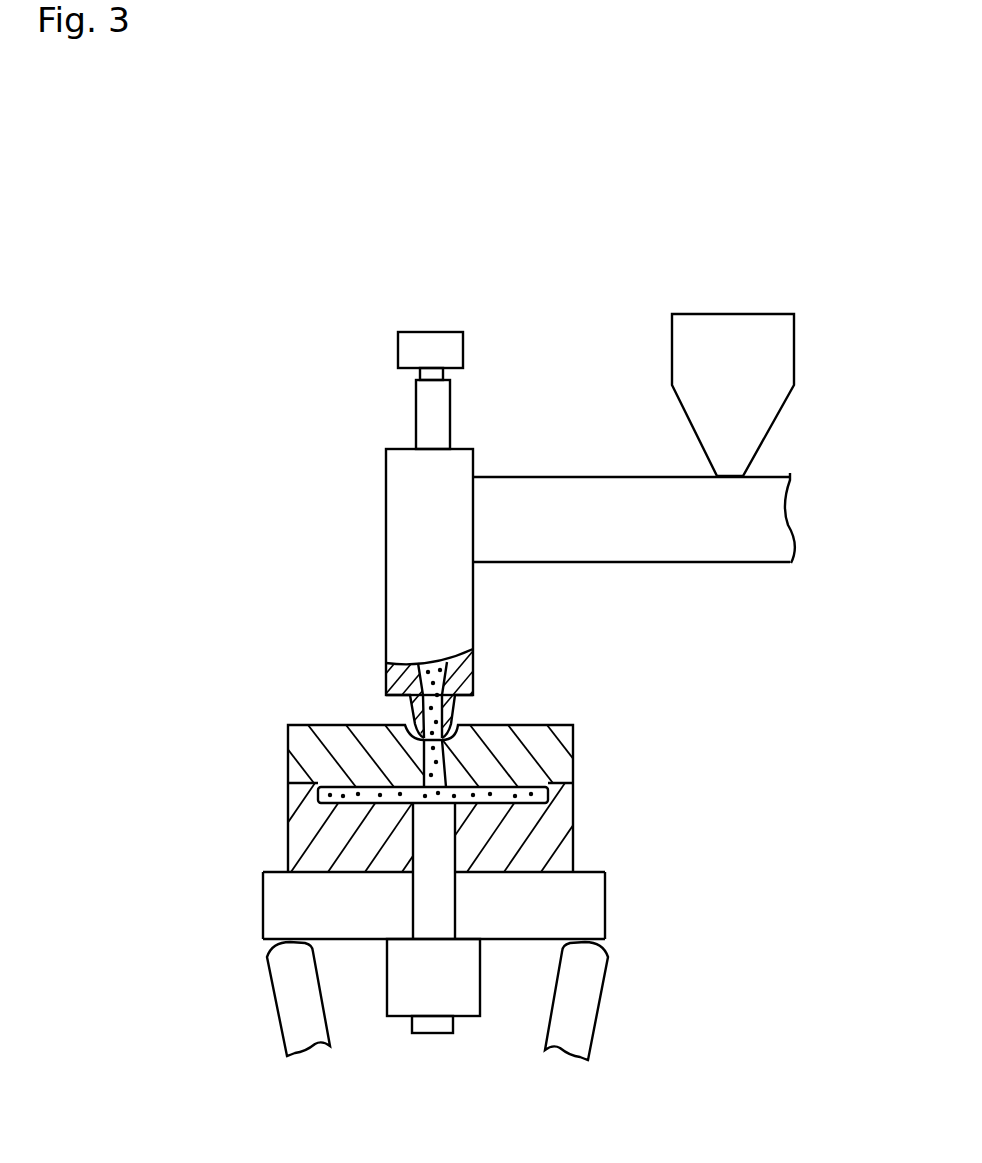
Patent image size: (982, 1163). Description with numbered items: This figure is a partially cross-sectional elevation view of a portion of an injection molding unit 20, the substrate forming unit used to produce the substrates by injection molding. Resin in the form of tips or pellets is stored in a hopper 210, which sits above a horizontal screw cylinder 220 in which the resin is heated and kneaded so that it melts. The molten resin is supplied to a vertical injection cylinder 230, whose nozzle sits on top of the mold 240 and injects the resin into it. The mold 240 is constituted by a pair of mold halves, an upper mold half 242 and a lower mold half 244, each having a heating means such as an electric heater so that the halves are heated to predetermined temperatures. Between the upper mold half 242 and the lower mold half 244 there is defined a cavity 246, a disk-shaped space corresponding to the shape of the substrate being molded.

The injection molding unit 20 is at (366, 524).
The hopper 210 is at (777, 357).
The screw cylinder 220 is at (680, 538).
The injection cylinder 230 is at (387, 683).
The mold 240 is at (284, 767).
The upper mold half 242 is at (567, 768).
The lower mold half 244 is at (567, 825).
The cavity 246 is at (502, 787).